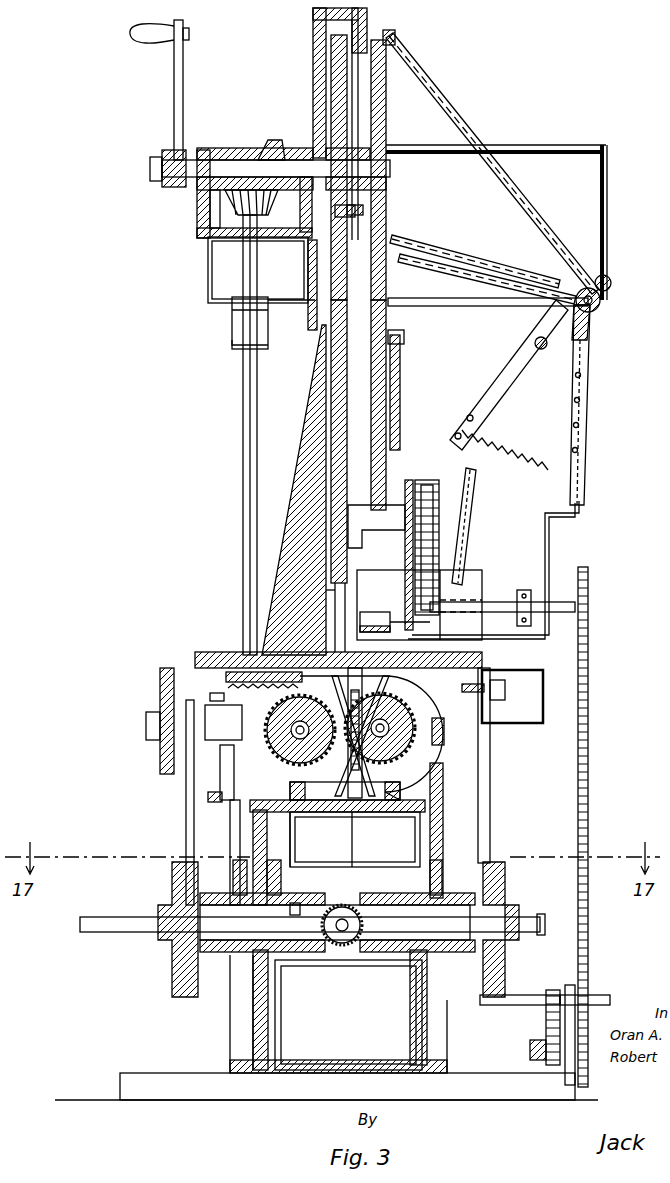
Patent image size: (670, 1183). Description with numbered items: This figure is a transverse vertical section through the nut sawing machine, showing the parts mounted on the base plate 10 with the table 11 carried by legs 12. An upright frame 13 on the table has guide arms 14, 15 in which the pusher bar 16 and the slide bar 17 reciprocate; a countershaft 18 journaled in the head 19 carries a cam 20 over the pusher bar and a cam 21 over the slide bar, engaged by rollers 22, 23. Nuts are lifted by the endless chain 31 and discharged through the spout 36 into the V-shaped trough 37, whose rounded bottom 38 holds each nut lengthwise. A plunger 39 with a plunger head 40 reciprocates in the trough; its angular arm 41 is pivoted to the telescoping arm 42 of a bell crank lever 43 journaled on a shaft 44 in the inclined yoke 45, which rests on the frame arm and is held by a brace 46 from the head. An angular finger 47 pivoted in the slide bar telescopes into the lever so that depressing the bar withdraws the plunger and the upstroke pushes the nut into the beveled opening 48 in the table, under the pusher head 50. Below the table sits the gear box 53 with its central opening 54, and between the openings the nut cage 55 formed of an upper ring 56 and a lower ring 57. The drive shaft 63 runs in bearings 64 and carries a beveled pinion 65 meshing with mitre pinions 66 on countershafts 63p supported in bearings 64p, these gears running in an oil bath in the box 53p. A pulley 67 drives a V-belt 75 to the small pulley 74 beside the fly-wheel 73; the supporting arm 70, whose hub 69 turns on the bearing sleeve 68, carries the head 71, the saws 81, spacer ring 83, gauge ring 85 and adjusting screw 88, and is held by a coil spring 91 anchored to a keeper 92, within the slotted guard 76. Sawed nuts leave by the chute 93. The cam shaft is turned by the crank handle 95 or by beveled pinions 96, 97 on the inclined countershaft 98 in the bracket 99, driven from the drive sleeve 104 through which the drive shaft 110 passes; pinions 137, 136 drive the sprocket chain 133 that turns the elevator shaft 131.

The base plate 10 is at (136, 1086).
The table 11 is at (205, 652).
The legs or standards 12 is at (490, 738).
The upright frame 13 is at (315, 424).
The guide arm 14 is at (362, 535).
The guide arm 15 is at (396, 336).
The pusher bar 16 is at (338, 372).
The slide bar 17 is at (388, 380).
The countershaft 18 is at (288, 165).
The head 19 is at (392, 36).
The cam 20 is at (336, 52).
The cam 21 is at (386, 104).
The roller 22 is at (335, 212).
The roller 23 is at (365, 212).
The endless chain 31 is at (428, 500).
The spout 36 is at (405, 528).
The V-shaped trough 37 is at (462, 582).
The trough bottom 38 is at (436, 672).
The plunger 39 is at (500, 640).
The plunger head 40 is at (375, 618).
The angular arm 41 is at (548, 556).
The telescoping arm 42 is at (588, 418).
The bell crank lever 43 is at (515, 282).
The shaft 44 is at (602, 300).
The inclined yoke 45 is at (518, 366).
The brace 46 is at (470, 110).
The angular finger 47 is at (430, 246).
The beveled opening 48 is at (337, 650).
The pusher head 50 is at (332, 592).
The gear box 53 is at (253, 1030).
The box 53p is at (347, 980).
The central opening 54 is at (354, 830).
The nut cage 55 is at (305, 768).
The upper ring 56 is at (380, 722).
The lower ring 57 is at (288, 820).
The drive shaft 63 is at (114, 920).
The countershaft 63p is at (440, 952).
The bearing 64 is at (282, 952).
The bearing 64p is at (440, 880).
The beveled pinion 65 is at (300, 904).
The mitre pinion 66 is at (350, 906).
The pulley 67 is at (172, 966).
The bearing sleeve 68 is at (240, 952).
The hub 69 is at (207, 880).
The supporting arm 70 is at (253, 822).
The head 71 is at (222, 752).
The fly-wheel 73 is at (160, 676).
The small pulley 74 is at (152, 740).
The V-belt 75 is at (186, 792).
The slotted guard 76 is at (208, 798).
The circular saw 81 is at (385, 760).
The spacer ring 83 is at (385, 745).
The gauge ring 85 is at (280, 764).
The screw 88 is at (450, 718).
The coil spring 91 is at (486, 690).
The keeper 92 is at (505, 684).
The chute 93 is at (315, 830).
The crank handle 95 is at (176, 82).
The beveled pinion 96 is at (276, 144).
The beveled pinion 97 is at (197, 210).
The inclined countershaft 98 is at (242, 374).
The bracket 99 is at (285, 237).
The drive sleeve 104 is at (520, 995).
The drive shaft 110 is at (600, 998).
The shaft 131 is at (500, 602).
The sprocket chain 133 is at (590, 724).
The pinion 136 is at (530, 1050).
The pinion 137 is at (546, 1020).